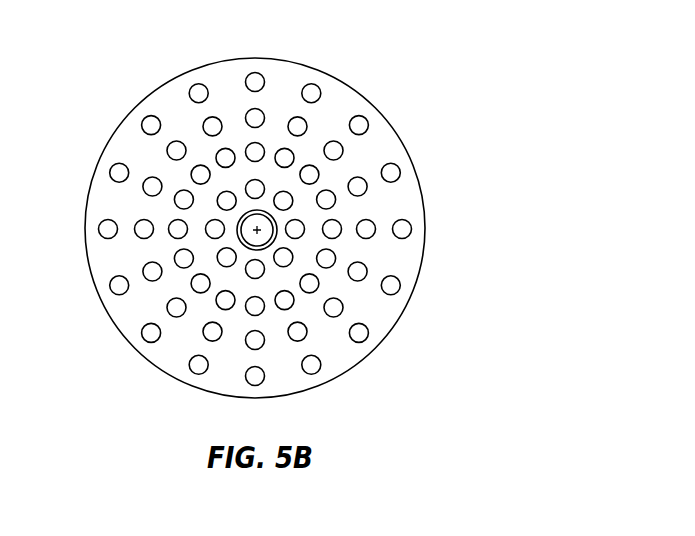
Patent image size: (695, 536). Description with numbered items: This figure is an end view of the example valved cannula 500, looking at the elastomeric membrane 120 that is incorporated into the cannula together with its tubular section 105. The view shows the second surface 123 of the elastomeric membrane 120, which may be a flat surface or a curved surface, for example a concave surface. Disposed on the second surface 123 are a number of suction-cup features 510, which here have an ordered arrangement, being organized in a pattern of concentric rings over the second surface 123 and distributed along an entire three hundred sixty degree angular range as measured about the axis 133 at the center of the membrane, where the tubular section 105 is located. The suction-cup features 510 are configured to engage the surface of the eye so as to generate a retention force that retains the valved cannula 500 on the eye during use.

The valved cannula 500 is at (305, 221).
The elastomeric membrane 120 is at (392, 125).
The second surface 123 is at (262, 229).
The suction-cup features 510 is at (245, 116).
The axis 133 is at (266, 220).
The tubular section 105 is at (276, 220).